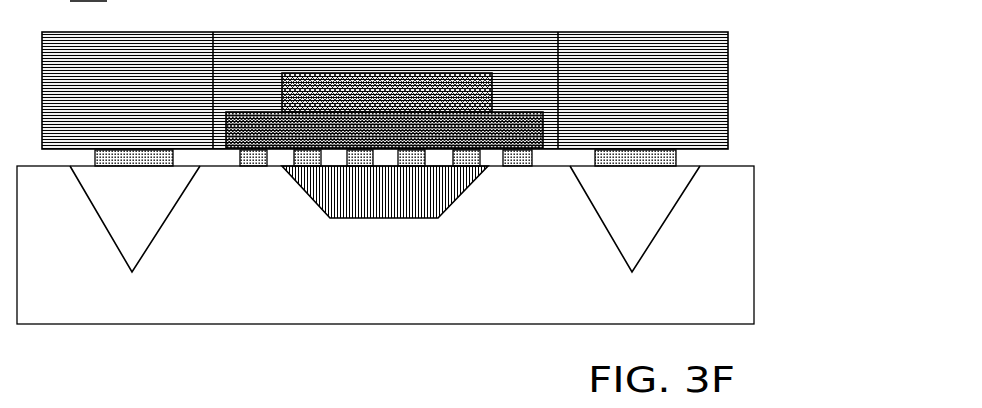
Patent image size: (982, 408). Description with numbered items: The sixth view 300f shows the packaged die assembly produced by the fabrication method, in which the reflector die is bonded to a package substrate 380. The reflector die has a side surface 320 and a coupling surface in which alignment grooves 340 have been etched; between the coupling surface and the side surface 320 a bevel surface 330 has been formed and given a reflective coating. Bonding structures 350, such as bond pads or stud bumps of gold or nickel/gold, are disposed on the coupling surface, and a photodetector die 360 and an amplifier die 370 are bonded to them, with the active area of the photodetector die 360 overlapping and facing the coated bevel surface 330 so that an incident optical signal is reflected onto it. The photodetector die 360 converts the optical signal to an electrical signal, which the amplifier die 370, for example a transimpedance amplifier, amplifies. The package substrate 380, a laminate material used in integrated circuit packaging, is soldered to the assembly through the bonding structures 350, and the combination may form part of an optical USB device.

The sixth view 300f is at (76, 338).
The side surface 320 is at (468, 283).
The bevel surface 330 is at (405, 202).
The alignment grooves 340 is at (150, 202).
The bonding structures 350 is at (261, 178).
The photodetector die 360 is at (490, 9).
The amplifier die 370 is at (470, 103).
The package substrate 380 is at (755, 16).